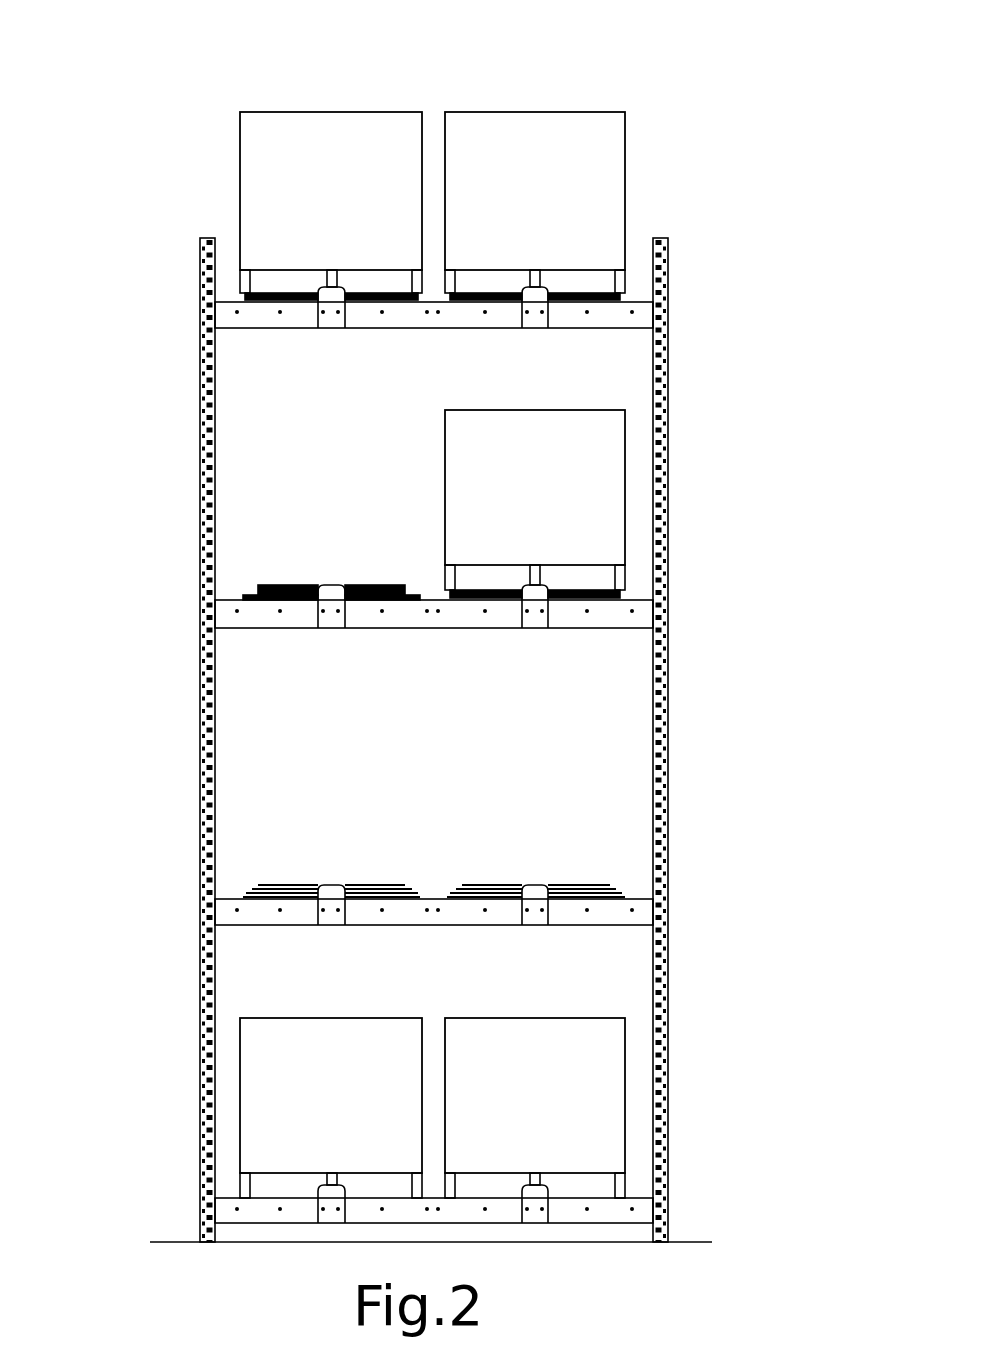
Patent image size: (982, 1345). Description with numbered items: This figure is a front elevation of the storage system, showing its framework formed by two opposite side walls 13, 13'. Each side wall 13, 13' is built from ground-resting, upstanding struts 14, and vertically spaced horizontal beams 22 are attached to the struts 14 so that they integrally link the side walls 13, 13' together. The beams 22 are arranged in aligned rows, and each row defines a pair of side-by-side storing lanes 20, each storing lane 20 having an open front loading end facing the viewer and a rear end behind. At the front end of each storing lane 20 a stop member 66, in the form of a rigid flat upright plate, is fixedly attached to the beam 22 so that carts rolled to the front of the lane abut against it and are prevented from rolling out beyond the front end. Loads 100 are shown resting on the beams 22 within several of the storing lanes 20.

The side wall 13 is at (714, 740).
The side wall 13' is at (154, 738).
The strut 14 is at (429, 738).
The storing lane 20 is at (341, 55).
The horizontal beam 22 is at (258, 324).
The stop member 66 is at (332, 320).
The pallet tray 100 is at (292, 281).